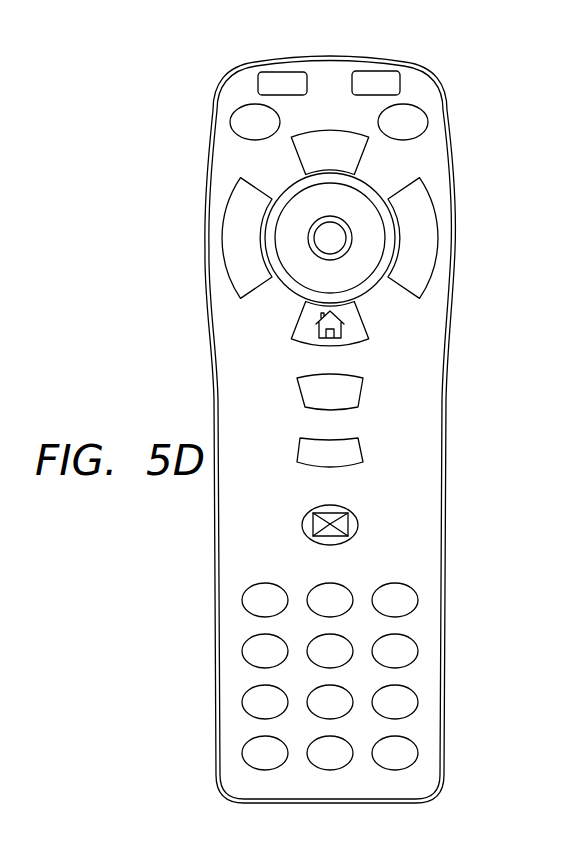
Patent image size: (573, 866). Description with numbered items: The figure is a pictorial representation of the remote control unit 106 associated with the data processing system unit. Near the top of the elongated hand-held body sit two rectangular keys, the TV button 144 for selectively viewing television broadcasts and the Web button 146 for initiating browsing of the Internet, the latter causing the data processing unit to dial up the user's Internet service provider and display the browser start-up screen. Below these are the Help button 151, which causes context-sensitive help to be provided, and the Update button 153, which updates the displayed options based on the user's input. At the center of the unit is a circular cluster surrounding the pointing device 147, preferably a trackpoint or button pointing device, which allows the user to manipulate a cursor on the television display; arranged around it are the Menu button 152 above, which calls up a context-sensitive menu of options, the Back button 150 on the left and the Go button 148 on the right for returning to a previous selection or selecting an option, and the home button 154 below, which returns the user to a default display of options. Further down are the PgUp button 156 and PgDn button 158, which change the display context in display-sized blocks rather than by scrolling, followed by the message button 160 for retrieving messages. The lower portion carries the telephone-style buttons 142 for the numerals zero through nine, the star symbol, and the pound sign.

The remote control unit 106 is at (446, 477).
The buttons 142 is at (375, 676).
The TV button 144 is at (282, 72).
The Web button 146 is at (375, 71).
The pointing device 147 is at (337, 232).
The Go button 148 is at (440, 238).
The Back button 150 is at (222, 238).
The Help button 151 is at (231, 124).
The Menu button 152 is at (303, 130).
The Update button 153 is at (428, 122).
The home button 154 is at (300, 325).
The PgUp button 156 is at (360, 397).
The PgDn button 158 is at (302, 446).
The message button 160 is at (305, 521).